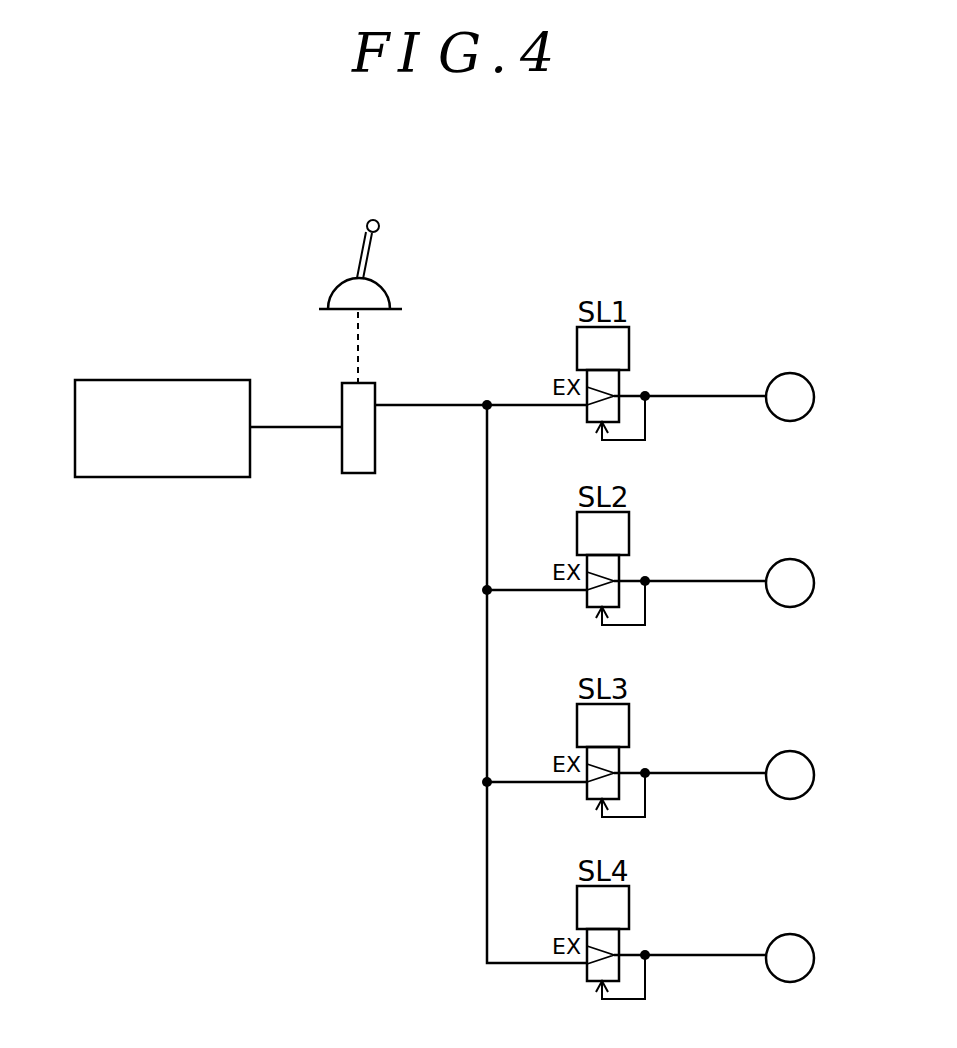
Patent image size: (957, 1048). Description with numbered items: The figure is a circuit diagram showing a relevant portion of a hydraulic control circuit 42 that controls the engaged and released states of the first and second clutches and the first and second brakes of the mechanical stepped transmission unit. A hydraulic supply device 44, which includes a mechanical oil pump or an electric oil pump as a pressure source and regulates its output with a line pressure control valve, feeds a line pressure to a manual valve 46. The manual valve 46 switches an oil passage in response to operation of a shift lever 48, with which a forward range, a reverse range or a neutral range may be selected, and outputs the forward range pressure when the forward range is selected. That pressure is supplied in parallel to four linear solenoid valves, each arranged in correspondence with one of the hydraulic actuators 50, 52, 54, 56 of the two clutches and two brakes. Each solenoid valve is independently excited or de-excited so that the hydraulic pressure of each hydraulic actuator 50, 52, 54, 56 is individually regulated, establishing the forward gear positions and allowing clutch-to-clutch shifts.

The hydraulic control circuit 42 is at (704, 245).
The hydraulic supply device 44 is at (105, 383).
The manual valve 46 is at (353, 463).
The shift lever 48 is at (362, 250).
The hydraulic actuator 50 is at (794, 373).
The hydraulic actuator 52 is at (794, 562).
The hydraulic actuator 54 is at (794, 751).
The hydraulic actuator 56 is at (794, 937).